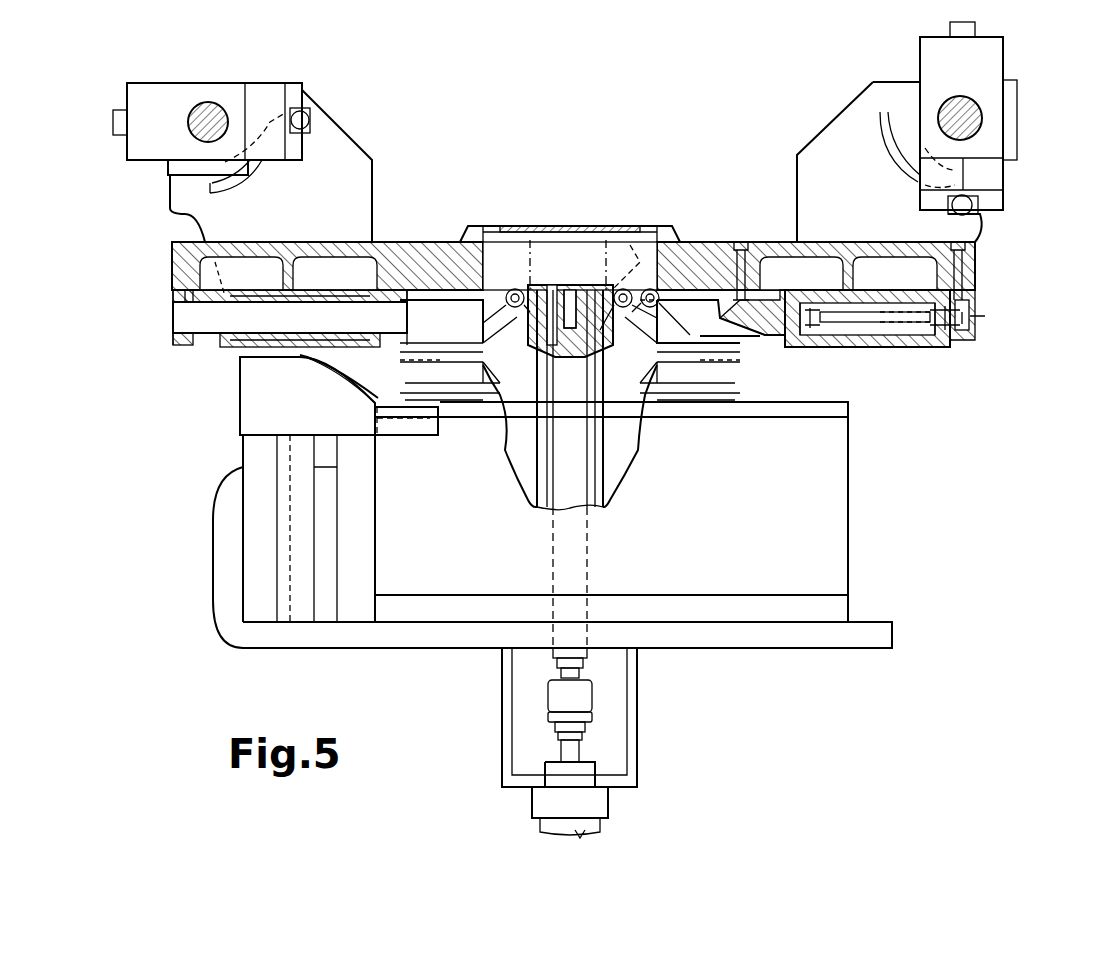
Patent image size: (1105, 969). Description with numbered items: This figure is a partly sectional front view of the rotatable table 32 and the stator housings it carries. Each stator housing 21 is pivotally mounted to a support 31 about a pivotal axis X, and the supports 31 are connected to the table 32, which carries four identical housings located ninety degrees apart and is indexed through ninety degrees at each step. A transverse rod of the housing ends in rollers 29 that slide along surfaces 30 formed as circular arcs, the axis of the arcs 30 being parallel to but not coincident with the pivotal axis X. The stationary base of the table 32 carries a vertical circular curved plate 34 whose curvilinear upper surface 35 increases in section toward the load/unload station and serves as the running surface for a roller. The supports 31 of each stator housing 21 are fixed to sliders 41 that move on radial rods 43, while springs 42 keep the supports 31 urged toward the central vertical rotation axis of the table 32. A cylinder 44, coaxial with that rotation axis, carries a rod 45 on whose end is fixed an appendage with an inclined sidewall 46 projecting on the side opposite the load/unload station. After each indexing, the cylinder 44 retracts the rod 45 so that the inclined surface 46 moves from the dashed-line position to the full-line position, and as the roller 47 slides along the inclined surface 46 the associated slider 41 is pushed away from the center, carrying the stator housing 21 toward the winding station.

The stator housing 21 is at (130, 172).
The rollers 29 is at (308, 120).
The surfaces formed as circular arcs 30 is at (260, 165).
The support 31 is at (215, 213).
The rotatable table 32 is at (425, 242).
The vertical circular curved plate 34 is at (255, 398).
The curvilinear upper surface 35 is at (330, 398).
The slider 41 is at (898, 347).
The spring 42 is at (818, 347).
The radial rod 43 is at (215, 318).
The cylinder 44 is at (590, 803).
The rod 45 is at (583, 290).
The inclined sidewall 46 is at (621, 288).
The roller 47 is at (692, 242).
The pivotal axis X is at (212, 118).